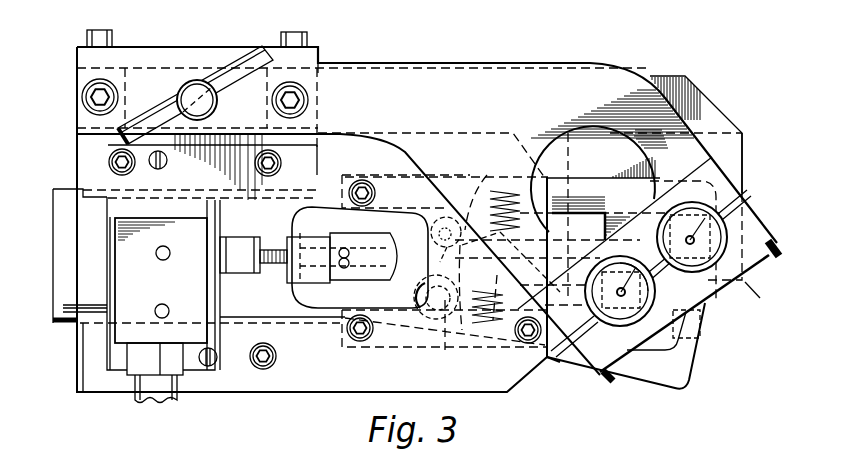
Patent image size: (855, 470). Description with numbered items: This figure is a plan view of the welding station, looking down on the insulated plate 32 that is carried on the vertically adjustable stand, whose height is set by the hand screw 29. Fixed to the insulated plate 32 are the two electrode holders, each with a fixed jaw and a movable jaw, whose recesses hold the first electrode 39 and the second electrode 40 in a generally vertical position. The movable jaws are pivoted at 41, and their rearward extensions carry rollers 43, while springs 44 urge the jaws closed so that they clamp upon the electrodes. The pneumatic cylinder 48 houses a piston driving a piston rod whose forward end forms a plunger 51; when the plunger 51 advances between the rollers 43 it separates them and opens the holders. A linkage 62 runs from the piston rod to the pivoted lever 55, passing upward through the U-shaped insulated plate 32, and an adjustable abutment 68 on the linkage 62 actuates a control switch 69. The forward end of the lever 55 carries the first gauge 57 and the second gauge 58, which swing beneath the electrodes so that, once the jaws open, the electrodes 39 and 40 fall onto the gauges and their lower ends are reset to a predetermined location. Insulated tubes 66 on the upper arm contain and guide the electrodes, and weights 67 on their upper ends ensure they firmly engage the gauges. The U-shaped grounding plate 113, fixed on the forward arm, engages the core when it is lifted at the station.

The hand screw 29 is at (190, 86).
The insulated plate 32 is at (342, 388).
The first electrode 39 is at (738, 190).
The second electrode 40 is at (648, 278).
The pivot of movable jaws 41 is at (636, 210).
The rollers 43 is at (486, 180).
The springs 44 is at (497, 291).
The pneumatic cylinder 48 is at (84, 282).
The plunger 51 is at (422, 240).
The pivoted lever 55 is at (564, 364).
The first gauge 57 is at (698, 314).
The second gauge 58 is at (650, 295).
The linkage 62 is at (300, 255).
The insulated tubes 66 is at (740, 262).
The weights 67 is at (735, 222).
The adjustable abutment 68 is at (271, 250).
The control switch 69 is at (138, 302).
The grounding plate 113 is at (768, 293).